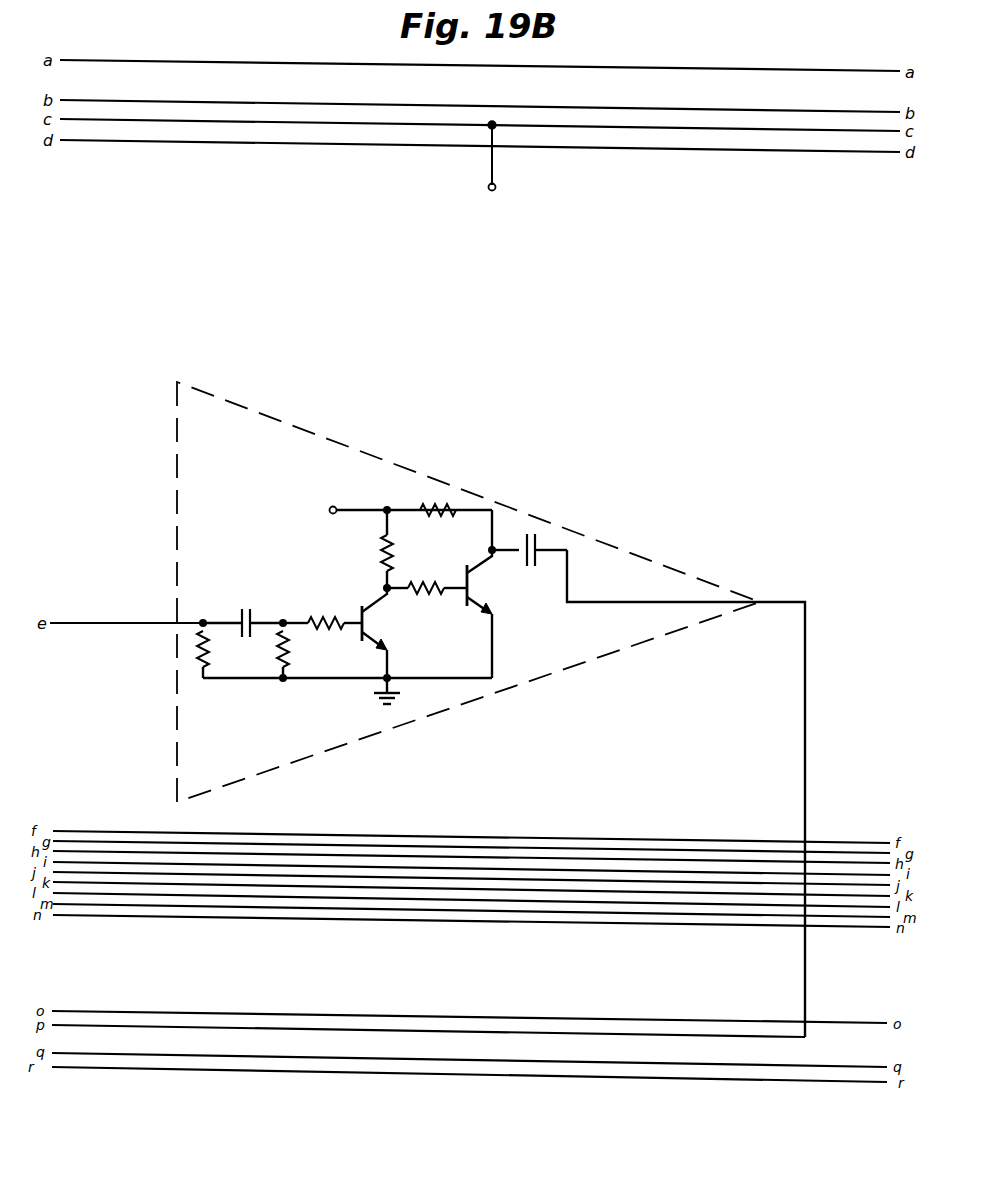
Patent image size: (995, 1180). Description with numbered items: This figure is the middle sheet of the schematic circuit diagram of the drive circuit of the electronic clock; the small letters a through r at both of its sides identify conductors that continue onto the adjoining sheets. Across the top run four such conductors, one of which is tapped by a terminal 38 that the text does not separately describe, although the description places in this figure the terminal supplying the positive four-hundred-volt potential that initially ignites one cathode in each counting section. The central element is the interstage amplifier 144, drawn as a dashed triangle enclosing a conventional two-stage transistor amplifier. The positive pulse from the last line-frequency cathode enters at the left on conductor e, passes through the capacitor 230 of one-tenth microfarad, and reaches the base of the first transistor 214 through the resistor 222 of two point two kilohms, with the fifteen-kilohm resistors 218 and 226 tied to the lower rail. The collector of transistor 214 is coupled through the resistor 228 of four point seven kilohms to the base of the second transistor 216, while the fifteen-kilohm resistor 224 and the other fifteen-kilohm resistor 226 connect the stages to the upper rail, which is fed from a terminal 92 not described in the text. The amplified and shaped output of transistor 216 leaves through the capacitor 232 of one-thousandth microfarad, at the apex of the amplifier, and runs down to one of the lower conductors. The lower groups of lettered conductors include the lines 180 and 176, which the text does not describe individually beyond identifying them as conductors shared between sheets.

The terminal tap on line c 38 is at (496, 189).
The interstage amplifier 144 is at (318, 433).
The supply terminal 92 is at (333, 505).
The resistor 218 is at (222, 652).
The capacitor 230 is at (243, 614).
The resistor 226 is at (283, 655).
The resistor 222 is at (333, 592).
The resistor 224 is at (381, 540).
The resistor 228 is at (425, 597).
The transistor 214 is at (372, 620).
The transistor 216 is at (474, 587).
The capacitor 232 is at (538, 568).
The conductor line o 180 is at (362, 1012).
The conductor line r 176 is at (348, 1076).